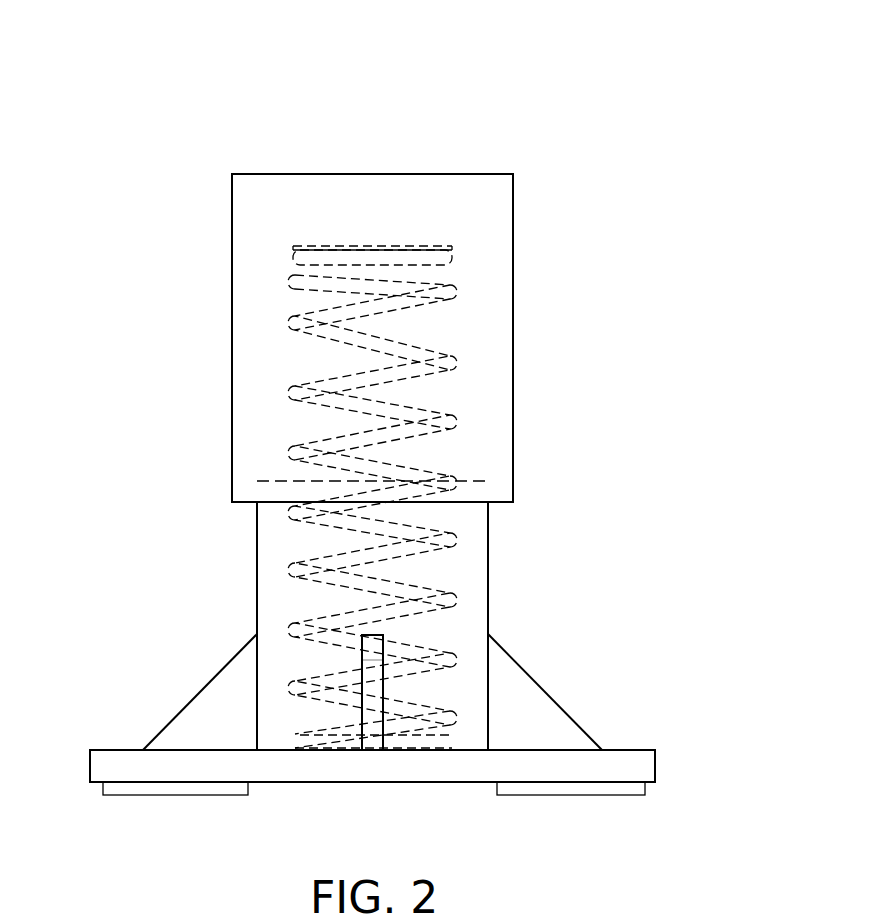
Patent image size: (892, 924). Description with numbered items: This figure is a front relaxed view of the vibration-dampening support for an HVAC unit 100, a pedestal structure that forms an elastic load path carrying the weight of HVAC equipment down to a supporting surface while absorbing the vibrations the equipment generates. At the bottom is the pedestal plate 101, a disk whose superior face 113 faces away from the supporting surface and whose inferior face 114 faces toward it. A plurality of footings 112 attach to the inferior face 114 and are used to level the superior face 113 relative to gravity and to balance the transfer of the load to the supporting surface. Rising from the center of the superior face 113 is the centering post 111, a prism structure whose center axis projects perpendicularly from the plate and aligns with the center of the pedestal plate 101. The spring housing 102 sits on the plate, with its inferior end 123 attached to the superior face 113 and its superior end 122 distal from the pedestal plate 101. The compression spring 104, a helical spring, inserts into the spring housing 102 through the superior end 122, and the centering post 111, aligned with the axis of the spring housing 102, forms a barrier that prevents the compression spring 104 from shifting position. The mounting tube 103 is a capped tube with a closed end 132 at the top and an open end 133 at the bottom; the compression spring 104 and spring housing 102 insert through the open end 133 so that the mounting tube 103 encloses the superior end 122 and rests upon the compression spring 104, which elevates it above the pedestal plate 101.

The vibration-dampening support for an HVAC unit 100 is at (113, 125).
The pedestal plate 101 is at (655, 768).
The spring housing 102 is at (488, 570).
The mounting tube 103 is at (513, 331).
The compression spring 104 is at (452, 290).
The centering post 111 is at (362, 667).
The plurality of footings 112 is at (503, 793).
The superior face 113 is at (110, 750).
The inferior face 114 is at (540, 714).
The superior end 122 is at (470, 480).
The inferior end 123 is at (465, 748).
The closed end 132 is at (288, 174).
The open end 133 is at (253, 497).